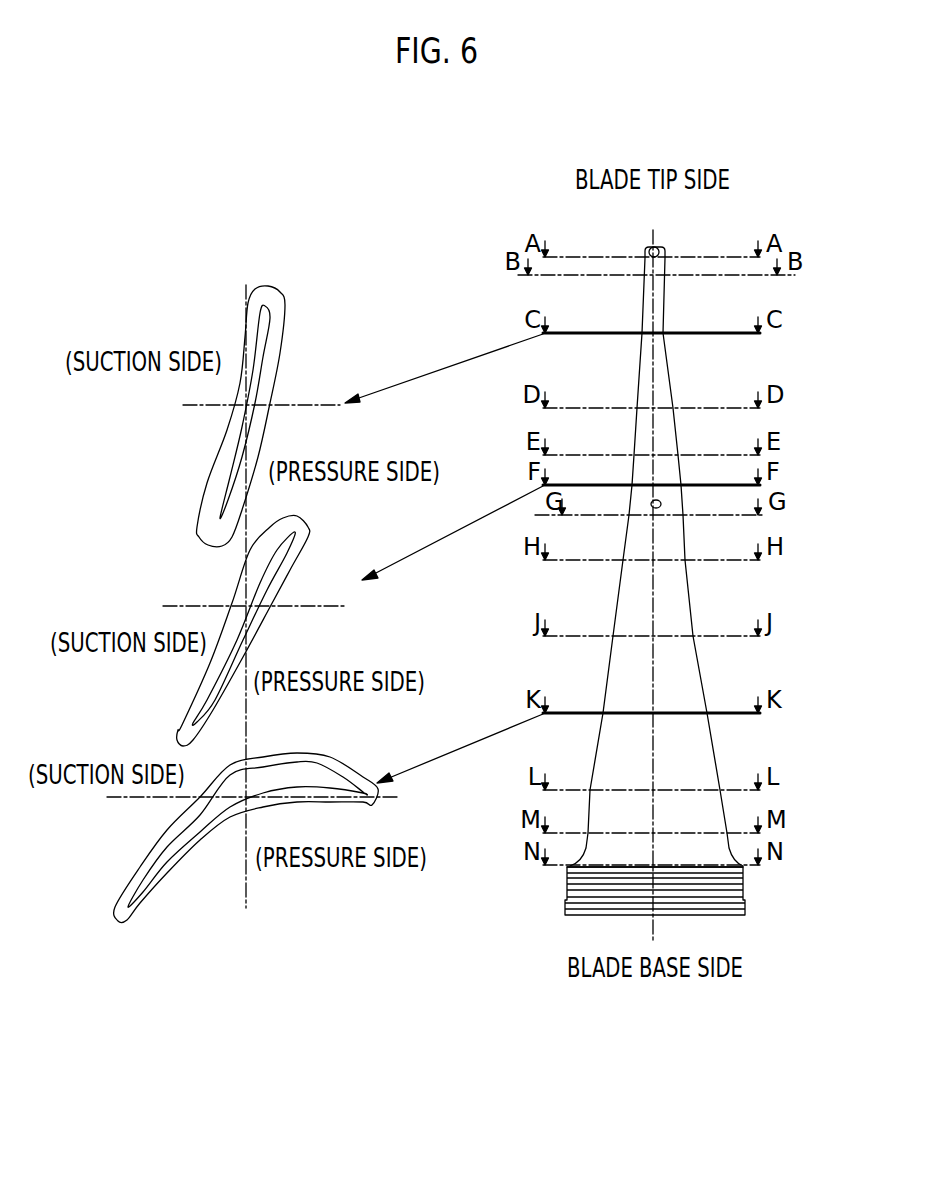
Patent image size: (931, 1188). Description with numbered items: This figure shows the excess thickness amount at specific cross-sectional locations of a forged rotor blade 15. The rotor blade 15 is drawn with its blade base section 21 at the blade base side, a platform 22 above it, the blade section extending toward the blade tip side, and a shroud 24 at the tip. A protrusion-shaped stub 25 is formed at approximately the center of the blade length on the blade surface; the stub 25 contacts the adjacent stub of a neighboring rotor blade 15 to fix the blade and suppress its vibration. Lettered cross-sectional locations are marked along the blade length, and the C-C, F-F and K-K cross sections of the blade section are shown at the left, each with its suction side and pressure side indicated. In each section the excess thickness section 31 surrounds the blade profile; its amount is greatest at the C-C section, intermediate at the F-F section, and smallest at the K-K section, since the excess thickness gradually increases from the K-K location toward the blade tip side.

The rotor blade 15 is at (678, 567).
The blade base section 21 is at (567, 903).
The platform 22 is at (738, 867).
The shroud 24 is at (661, 250).
The stub 25 is at (661, 506).
The excess thickness section 31 is at (273, 375).